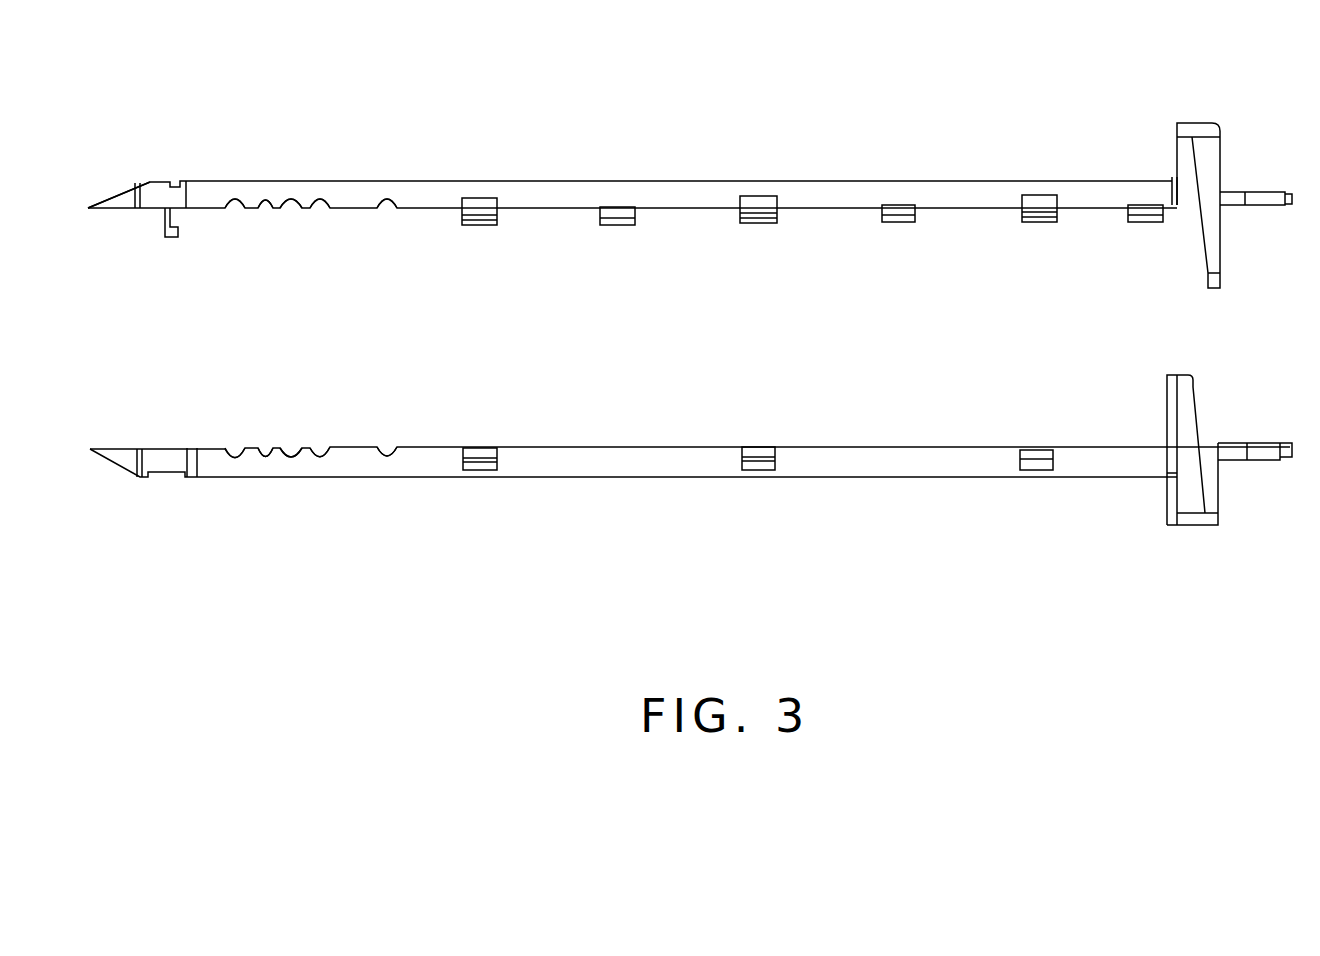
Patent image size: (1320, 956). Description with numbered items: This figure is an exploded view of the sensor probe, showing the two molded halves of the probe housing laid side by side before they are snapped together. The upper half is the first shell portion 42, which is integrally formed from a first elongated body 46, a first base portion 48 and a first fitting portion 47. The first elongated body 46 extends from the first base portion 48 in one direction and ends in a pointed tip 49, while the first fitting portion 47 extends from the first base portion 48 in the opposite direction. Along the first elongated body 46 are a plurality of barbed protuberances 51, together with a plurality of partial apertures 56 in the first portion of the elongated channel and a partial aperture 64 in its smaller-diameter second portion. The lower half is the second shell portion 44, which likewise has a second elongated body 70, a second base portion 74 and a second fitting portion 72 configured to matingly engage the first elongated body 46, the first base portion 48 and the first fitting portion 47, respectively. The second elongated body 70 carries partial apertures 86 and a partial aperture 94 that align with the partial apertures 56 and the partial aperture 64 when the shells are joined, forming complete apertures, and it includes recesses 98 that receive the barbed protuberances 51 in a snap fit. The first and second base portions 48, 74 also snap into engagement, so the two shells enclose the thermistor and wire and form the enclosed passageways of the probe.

The first shell portion 42 is at (682, 180).
The second shell portion 44 is at (705, 494).
The first elongated body 46 is at (547, 183).
The first fitting portion 47 is at (1262, 197).
The first base portion 48 is at (1198, 125).
The pointed tip 49 is at (98, 205).
The barbed protuberances 51 is at (478, 226).
The partial apertures 56 is at (262, 202).
The partial aperture 64 is at (388, 204).
The second elongated body 70 is at (594, 470).
The second fitting portion 72 is at (1278, 458).
The second base portion 74 is at (1190, 513).
The partial apertures 86 is at (265, 458).
The partial aperture 94 is at (385, 458).
The recesses 98 is at (478, 448).